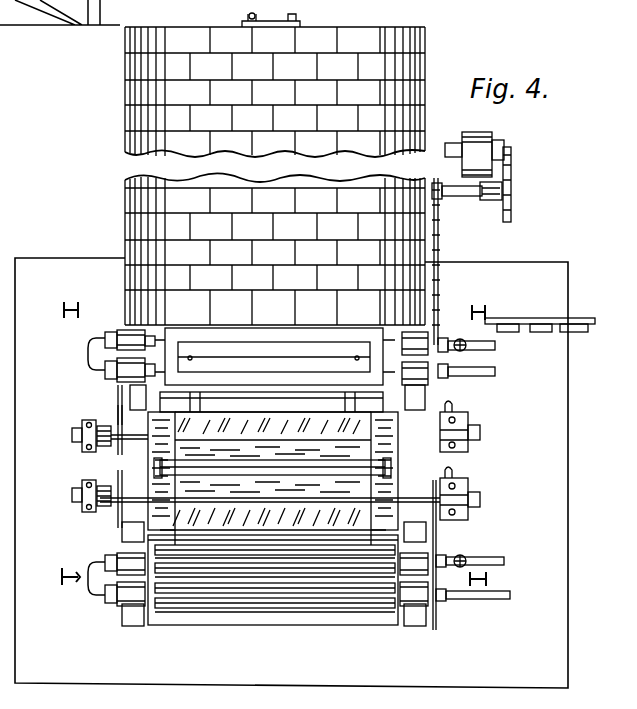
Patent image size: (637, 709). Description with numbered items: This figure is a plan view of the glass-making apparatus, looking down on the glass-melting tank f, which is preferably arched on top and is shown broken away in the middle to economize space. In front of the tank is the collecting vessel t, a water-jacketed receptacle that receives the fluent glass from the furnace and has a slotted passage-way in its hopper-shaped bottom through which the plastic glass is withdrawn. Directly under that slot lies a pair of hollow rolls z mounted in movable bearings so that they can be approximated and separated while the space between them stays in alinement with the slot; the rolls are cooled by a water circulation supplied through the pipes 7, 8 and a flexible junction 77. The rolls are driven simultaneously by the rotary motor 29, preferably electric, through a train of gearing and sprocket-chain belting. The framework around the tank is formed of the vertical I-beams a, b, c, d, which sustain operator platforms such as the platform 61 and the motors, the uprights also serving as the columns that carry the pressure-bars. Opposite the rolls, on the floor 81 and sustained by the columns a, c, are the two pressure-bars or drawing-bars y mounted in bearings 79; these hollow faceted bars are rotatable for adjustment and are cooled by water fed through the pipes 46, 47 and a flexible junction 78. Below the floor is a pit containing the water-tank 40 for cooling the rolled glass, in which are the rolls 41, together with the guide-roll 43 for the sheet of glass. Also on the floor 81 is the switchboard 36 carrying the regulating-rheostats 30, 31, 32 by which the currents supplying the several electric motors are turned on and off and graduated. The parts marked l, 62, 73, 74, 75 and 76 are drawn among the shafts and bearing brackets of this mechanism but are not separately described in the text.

The hanger bracket l is at (271, 13).
The glass-melting tank f is at (273, 176).
The floor 81 is at (291, 473).
The rotary motor 29 is at (474, 144).
The platform 61 is at (512, 184).
The chain 62 is at (449, 261).
The vertical I-beam d is at (73, 297).
The flexible junction 77 is at (92, 353).
The roll z is at (118, 330).
The collecting vessel t is at (275, 370).
The pipe 7 is at (490, 352).
The pipe 8 is at (490, 378).
The vertical I-beam b is at (486, 307).
The switchboard 36 is at (580, 320).
The regulating-rheostat 30 is at (510, 340).
The regulating-rheostat 31 is at (542, 340).
The regulating-rheostat 32 is at (576, 341).
The water-tank 40 is at (152, 455).
The roll 41 is at (395, 490).
The bearing bracket 75 is at (84, 443).
The bearing bracket 76 is at (84, 488).
The bearing bracket 73 is at (478, 432).
The bearing bracket 74 is at (480, 497).
The guide-roll 43 is at (385, 540).
The pressure-bar y is at (206, 600).
The bearing 79 is at (430, 604).
The flexible junction 78 is at (100, 565).
The vertical I-beam c is at (62, 578).
The pipe 46 is at (472, 556).
The vertical I-beam a is at (466, 578).
The pipe 47 is at (508, 582).